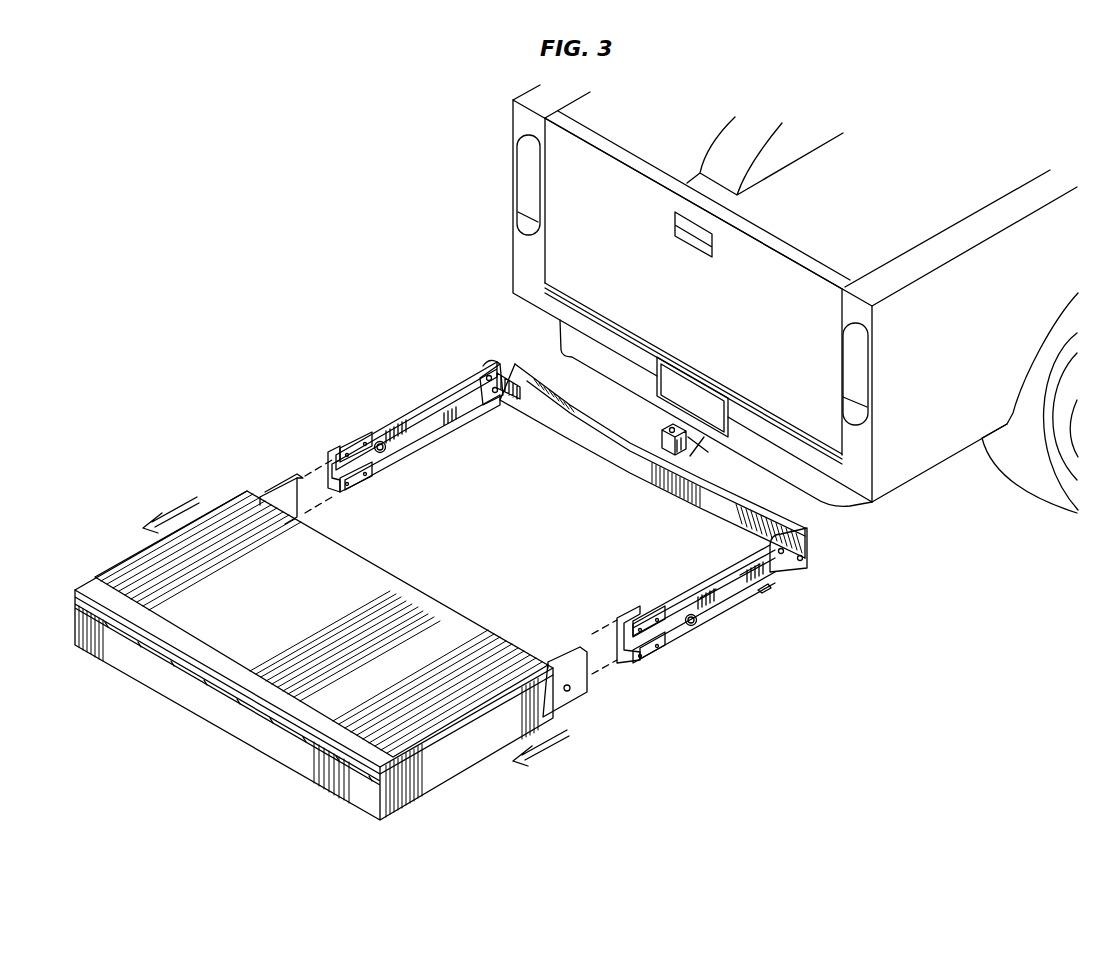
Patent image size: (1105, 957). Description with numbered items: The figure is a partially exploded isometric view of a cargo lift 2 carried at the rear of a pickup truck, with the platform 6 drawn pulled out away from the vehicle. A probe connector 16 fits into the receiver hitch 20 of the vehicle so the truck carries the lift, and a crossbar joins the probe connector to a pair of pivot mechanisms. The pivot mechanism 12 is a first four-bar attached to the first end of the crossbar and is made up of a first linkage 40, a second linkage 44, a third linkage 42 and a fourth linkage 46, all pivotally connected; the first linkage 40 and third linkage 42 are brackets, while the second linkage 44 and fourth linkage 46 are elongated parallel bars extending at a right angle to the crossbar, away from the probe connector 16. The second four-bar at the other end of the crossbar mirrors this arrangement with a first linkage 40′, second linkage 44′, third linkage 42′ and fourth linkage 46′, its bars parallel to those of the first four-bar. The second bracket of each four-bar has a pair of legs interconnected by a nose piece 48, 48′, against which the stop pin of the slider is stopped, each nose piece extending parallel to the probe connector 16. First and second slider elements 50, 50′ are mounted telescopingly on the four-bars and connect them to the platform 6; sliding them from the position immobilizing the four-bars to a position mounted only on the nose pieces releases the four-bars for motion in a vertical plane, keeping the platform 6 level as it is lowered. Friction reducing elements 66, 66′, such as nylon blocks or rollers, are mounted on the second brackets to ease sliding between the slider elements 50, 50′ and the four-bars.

The cargo lift 2 is at (219, 456).
The platform 6 is at (307, 619).
The pivot mechanism 12 is at (720, 620).
The probe connector 16 is at (664, 432).
The receiver hitch 20 is at (700, 447).
The first linkage 40 is at (815, 543).
The first linkage 40′ is at (497, 368).
The third linkage 42 is at (676, 630).
The third linkage 42′ is at (384, 466).
The second linkage 44 is at (718, 578).
The second linkage 44′ is at (437, 408).
The fourth linkage 46 is at (742, 590).
The fourth linkage 46′ is at (452, 426).
The nose piece 48 is at (621, 640).
The nose piece 48′ is at (330, 468).
The first slider element 50 is at (572, 654).
The second slider element 50′ is at (276, 488).
The friction reducing element 66 is at (650, 652).
The friction reducing element 66′ is at (365, 482).